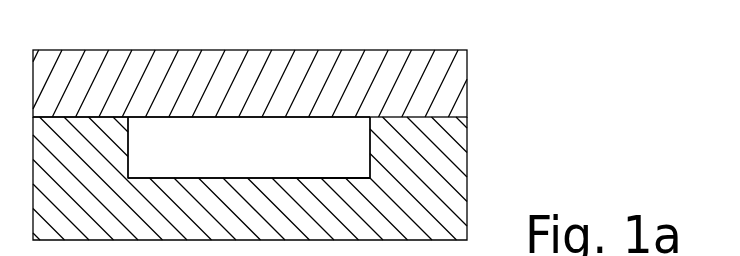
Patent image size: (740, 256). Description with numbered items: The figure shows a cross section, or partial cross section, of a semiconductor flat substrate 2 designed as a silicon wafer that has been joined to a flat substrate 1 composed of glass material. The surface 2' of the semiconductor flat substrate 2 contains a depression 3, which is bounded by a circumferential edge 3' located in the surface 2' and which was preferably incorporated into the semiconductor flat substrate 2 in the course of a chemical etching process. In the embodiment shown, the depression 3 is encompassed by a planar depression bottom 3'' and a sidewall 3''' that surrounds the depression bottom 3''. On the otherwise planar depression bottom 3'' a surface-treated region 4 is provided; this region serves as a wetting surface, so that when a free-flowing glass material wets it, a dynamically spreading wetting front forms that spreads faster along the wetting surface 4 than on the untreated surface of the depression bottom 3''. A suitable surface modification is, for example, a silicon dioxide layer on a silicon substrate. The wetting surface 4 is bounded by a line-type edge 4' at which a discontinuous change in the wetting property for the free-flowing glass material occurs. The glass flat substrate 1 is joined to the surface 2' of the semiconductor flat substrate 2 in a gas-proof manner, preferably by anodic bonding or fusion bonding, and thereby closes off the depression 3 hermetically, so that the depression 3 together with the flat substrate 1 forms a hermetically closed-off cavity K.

The flat substrate 1 is at (272, 101).
The semiconductor flat substrate 2 is at (250, 178).
The surface 2' is at (80, 62).
The depression 3 is at (249, 69).
The circumferential edge 3' is at (389, 78).
The depression bottom 3'' is at (419, 138).
The sidewall 3''' is at (156, 92).
The surface-treated region 4 is at (249, 92).
The line-type edge 4' is at (330, 92).
The cavity K is at (272, 158).